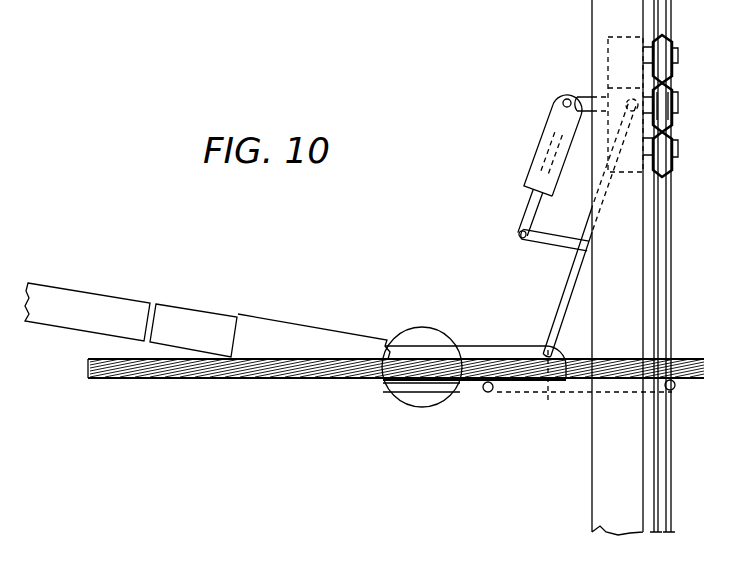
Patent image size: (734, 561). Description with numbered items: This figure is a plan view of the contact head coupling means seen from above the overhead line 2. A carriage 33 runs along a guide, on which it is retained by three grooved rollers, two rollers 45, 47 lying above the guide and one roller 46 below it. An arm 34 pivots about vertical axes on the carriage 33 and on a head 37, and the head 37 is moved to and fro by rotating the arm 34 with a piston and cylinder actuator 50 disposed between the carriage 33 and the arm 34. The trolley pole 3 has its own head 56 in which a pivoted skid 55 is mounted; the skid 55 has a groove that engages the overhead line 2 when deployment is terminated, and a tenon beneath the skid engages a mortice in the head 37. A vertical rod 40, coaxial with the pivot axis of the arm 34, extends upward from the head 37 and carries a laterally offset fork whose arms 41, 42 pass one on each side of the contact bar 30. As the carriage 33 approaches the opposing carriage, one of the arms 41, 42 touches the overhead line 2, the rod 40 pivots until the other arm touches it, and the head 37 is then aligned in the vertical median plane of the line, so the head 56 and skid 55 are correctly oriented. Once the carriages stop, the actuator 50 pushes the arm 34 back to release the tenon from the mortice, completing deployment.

The overhead line 2 is at (283, 380).
The trolley pole 3 is at (147, 295).
The contact bar 30 is at (632, 267).
The carriage 33 is at (608, 52).
The arm 34 is at (568, 286).
The head 37 is at (500, 345).
The vertical rod 40 is at (549, 396).
The fork arm 41 is at (485, 393).
The fork arm 42 is at (673, 391).
The grooved roller 45 is at (682, 165).
The grooved roller 46 is at (682, 118).
The grooved roller 47 is at (682, 70).
The piston and cylinder actuator 50 is at (546, 130).
The pivoted skid 55 is at (424, 330).
The head 56 is at (312, 322).